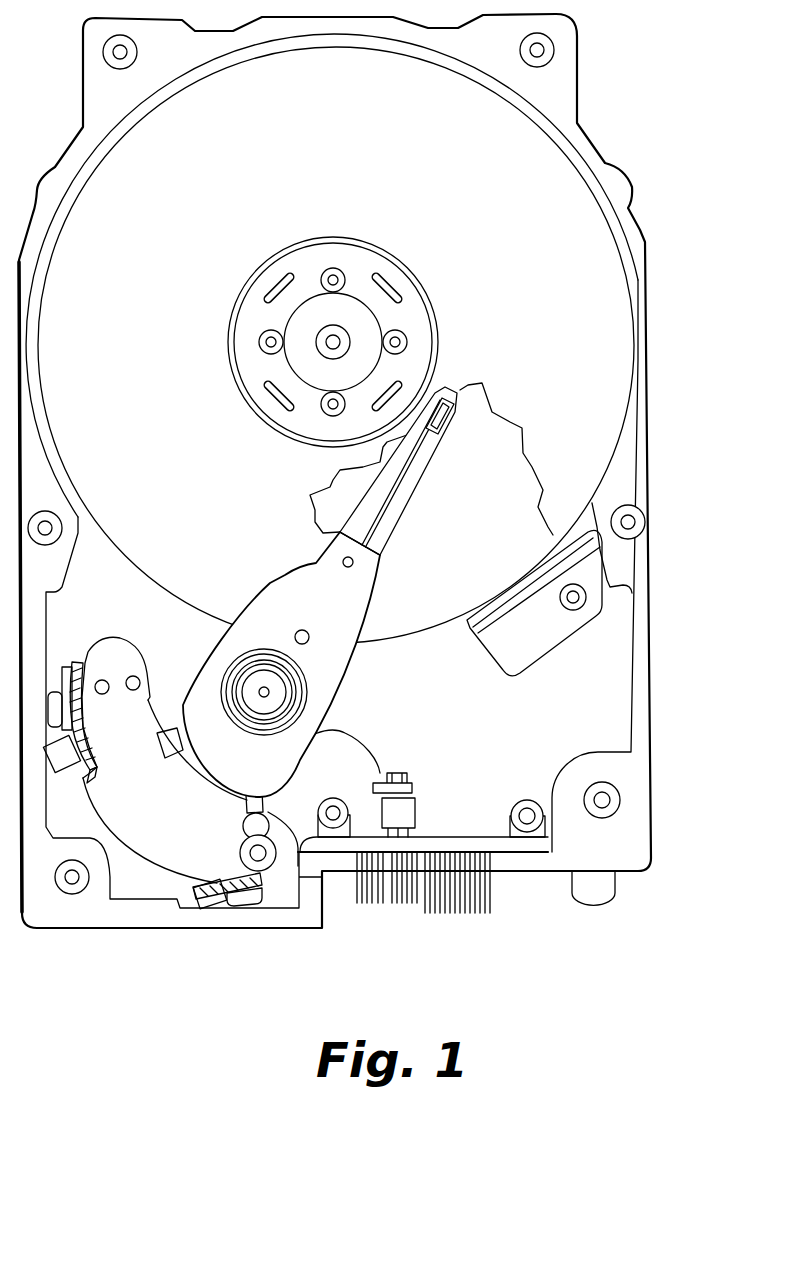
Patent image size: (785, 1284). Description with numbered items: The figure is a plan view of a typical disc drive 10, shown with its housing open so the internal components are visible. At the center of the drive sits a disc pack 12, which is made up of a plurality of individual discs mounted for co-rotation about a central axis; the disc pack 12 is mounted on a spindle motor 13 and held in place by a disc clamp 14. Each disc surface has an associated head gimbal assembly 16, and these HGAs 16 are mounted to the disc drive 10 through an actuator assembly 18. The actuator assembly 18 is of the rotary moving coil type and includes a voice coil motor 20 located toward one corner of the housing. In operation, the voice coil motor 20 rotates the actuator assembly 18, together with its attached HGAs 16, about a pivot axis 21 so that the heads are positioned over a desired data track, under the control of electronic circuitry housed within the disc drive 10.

The disc drive 10 is at (613, 100).
The disc pack 12 is at (428, 200).
The spindle motor 13 is at (405, 305).
The disc clamp 14 is at (350, 288).
The head gimbal assembly 16 is at (455, 393).
The actuator assembly 18 is at (354, 574).
The voice coil motor 20 is at (142, 650).
The pivot axis 21 is at (264, 690).